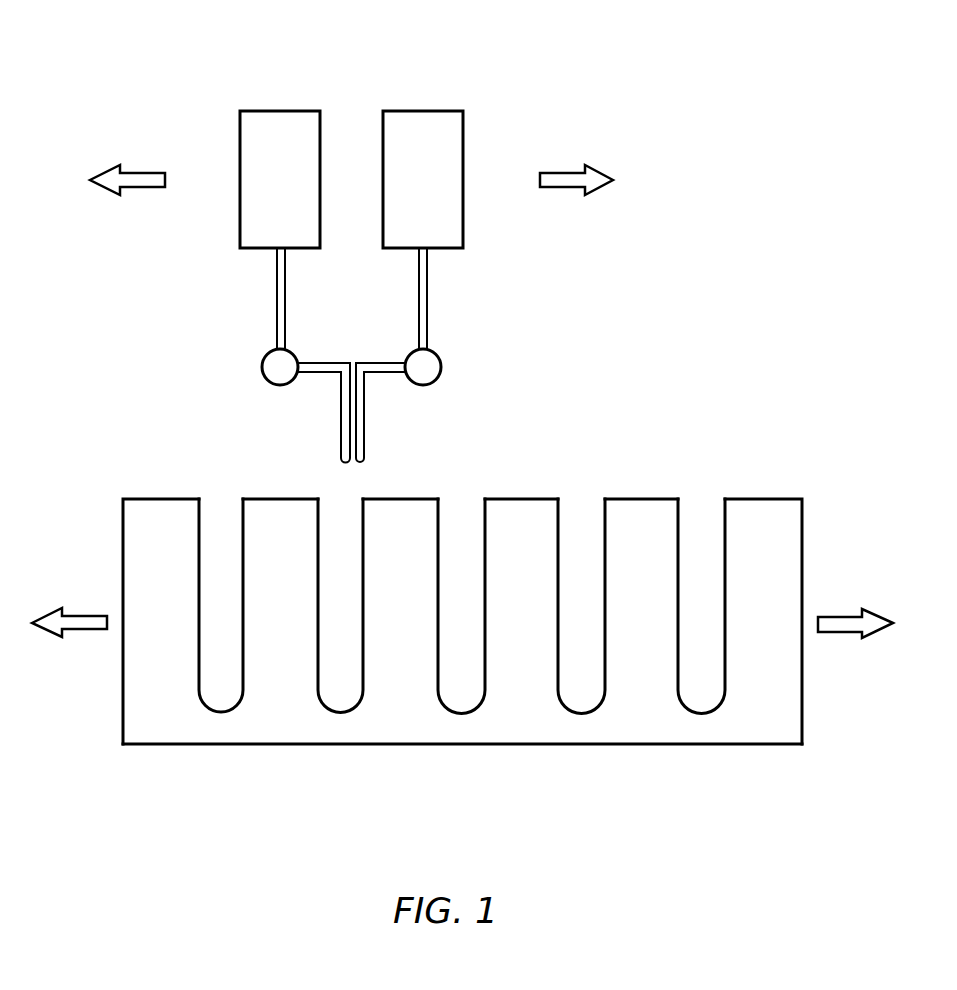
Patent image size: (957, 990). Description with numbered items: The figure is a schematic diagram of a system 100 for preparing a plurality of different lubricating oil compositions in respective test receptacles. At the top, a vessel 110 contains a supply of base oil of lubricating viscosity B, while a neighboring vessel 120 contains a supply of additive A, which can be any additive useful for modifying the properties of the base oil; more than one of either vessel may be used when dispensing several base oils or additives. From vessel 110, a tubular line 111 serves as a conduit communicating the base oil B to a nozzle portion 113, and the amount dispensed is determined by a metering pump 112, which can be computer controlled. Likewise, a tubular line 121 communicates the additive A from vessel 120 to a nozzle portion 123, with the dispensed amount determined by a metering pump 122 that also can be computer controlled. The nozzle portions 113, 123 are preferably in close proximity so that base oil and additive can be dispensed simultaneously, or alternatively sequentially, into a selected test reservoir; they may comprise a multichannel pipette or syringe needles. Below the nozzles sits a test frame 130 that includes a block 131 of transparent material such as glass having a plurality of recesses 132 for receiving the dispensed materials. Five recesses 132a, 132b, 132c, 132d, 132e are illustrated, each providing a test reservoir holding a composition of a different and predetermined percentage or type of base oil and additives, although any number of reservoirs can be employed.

The system 100 is at (425, 67).
The vessel 110 is at (262, 111).
The tubular line 111 is at (277, 328).
The metering pump 112 is at (262, 372).
The nozzle portion 113 is at (340, 418).
The vessel 120 is at (463, 141).
The tubular line 121 is at (428, 332).
The metering pump 122 is at (442, 365).
The nozzle portion 123 is at (363, 405).
The test frame 130 is at (463, 663).
The block 131 is at (527, 725).
The recesses 132 is at (222, 713).
The recess 132a is at (222, 523).
The recess 132b is at (340, 523).
The recess 132c is at (458, 523).
The recess 132d is at (578, 523).
The recess 132e is at (698, 523).